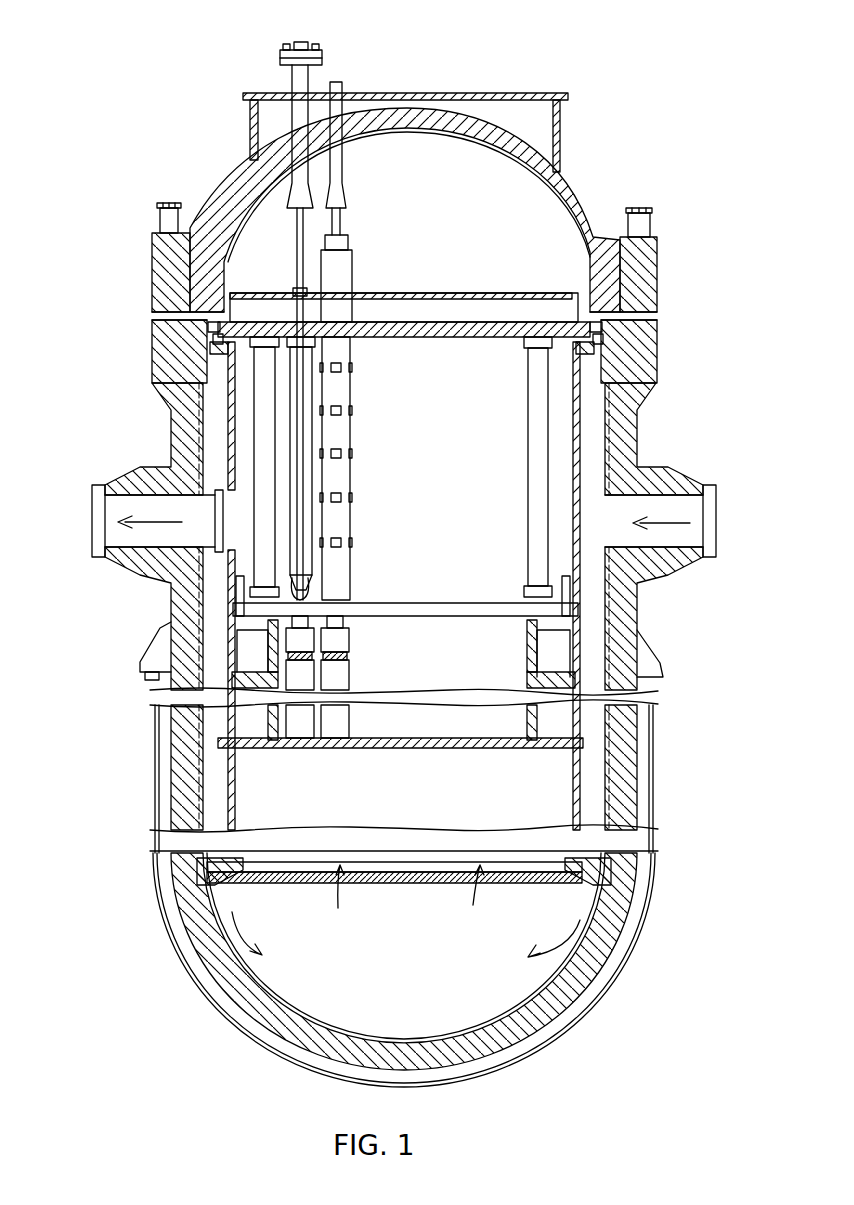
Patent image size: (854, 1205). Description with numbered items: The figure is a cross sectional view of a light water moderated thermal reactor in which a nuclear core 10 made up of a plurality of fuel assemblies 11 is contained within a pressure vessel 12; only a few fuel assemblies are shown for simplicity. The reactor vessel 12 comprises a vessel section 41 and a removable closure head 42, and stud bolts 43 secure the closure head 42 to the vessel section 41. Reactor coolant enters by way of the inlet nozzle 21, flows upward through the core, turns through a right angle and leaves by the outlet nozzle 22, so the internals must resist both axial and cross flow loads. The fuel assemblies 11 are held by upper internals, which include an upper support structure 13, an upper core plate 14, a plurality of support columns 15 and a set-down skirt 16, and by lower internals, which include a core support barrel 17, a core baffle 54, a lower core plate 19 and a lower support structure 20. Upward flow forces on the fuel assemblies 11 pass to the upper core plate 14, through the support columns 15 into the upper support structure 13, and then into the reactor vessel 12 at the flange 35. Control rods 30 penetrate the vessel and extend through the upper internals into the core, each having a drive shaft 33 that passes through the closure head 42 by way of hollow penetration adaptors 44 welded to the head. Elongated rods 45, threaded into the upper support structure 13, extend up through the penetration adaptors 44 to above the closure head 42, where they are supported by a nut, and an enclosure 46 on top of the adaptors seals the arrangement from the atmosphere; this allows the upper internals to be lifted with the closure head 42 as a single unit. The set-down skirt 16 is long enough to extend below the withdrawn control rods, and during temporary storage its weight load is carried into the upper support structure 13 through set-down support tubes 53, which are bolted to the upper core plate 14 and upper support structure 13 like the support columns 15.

The nuclear core 10 is at (424, 661).
The fuel assembly 11 is at (307, 670).
The pressure vessel 12 is at (609, 173).
The upper support structure 13 is at (453, 307).
The upper core plate 14 is at (440, 607).
The support column 15 is at (350, 435).
The set-down skirt 16 is at (572, 635).
The core support barrel 17 is at (578, 670).
The lower core plate 19 is at (427, 750).
The lower support structure 20 is at (495, 880).
The inlet nozzle 21 is at (690, 510).
The outlet nozzle 22 is at (98, 500).
The control rod 30 is at (389, 205).
The drive shaft 33 is at (342, 218).
The flange 35 is at (634, 352).
The vessel section 41 is at (168, 618).
The closure head 42 is at (587, 202).
The stud bolt 43 is at (168, 207).
The penetration adaptor 44 is at (340, 92).
The elongated rod 45 is at (297, 247).
The enclosure 46 is at (297, 43).
The set-down support tube 53 is at (272, 513).
The core baffle 54 is at (527, 678).